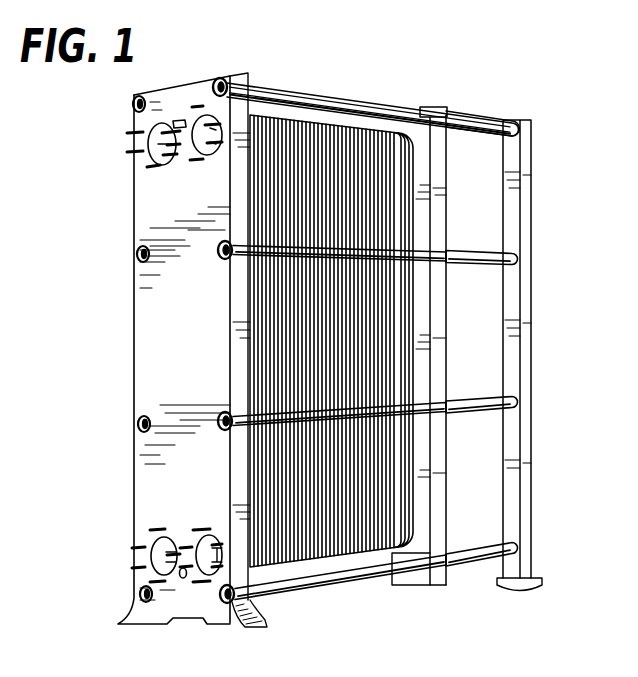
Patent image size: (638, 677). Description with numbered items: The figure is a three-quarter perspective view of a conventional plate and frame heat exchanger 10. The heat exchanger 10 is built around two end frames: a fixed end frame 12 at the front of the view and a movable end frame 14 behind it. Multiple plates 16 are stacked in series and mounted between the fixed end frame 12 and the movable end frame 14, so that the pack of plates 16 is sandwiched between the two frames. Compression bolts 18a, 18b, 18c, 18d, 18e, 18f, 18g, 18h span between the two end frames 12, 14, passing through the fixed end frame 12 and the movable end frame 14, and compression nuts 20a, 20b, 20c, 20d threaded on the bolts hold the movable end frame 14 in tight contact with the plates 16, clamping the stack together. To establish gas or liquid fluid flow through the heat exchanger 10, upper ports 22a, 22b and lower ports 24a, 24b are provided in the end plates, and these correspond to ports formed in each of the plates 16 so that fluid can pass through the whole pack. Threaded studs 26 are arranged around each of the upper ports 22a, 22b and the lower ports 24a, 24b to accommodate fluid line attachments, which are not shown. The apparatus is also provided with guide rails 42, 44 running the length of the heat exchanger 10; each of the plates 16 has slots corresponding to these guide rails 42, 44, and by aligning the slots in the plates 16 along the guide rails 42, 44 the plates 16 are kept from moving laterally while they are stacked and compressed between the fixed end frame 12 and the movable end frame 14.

The plate and frame heat exchanger 10 is at (446, 65).
The fixed end frame 12 is at (142, 216).
The movable end frame 14 is at (438, 183).
The plates 16 is at (385, 145).
The compression bolt 18a is at (291, 90).
The compression bolt 18b is at (514, 259).
The compression bolt 18c is at (514, 401).
The compression bolt 18d is at (492, 562).
The compression bolt 18e is at (133, 109).
The compression bolt 18f is at (136, 258).
The compression bolt 18g is at (137, 423).
The compression bolt 18h is at (137, 593).
The compression nut 20a is at (452, 122).
The compression nut 20b is at (452, 258).
The compression nut 20c is at (452, 406).
The compression nut 20d is at (453, 562).
The upper port 22a is at (164, 125).
The upper port 22b is at (210, 115).
The lower port 24a is at (153, 546).
The lower port 24b is at (216, 584).
The threaded studs 26 is at (198, 163).
The guide rail 42 is at (180, 118).
The guide rail 44 is at (180, 578).